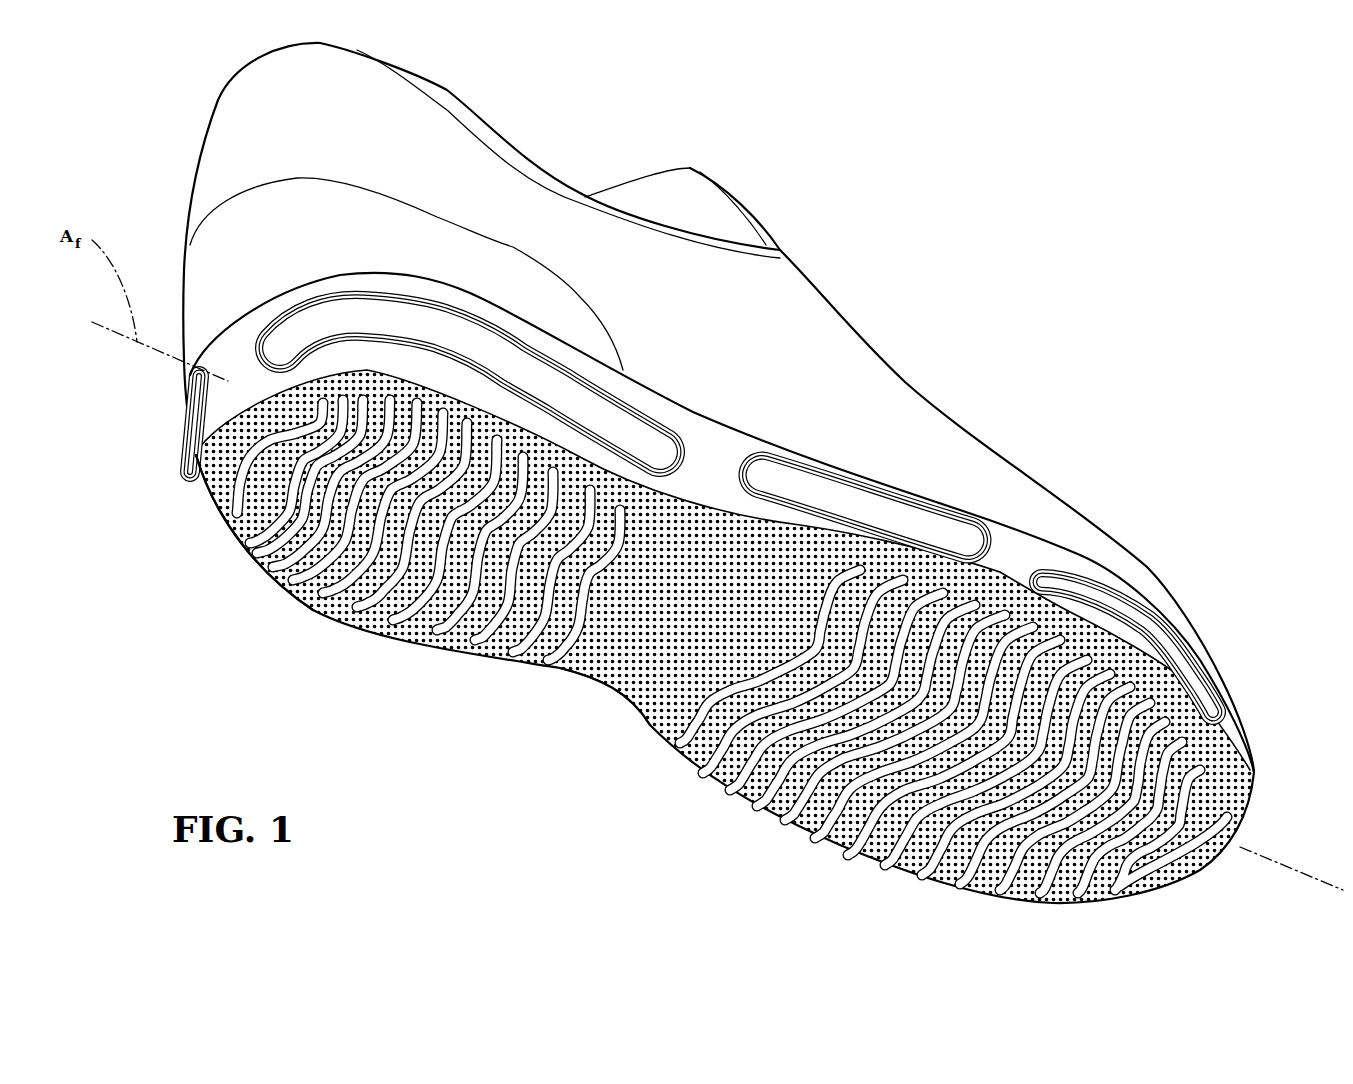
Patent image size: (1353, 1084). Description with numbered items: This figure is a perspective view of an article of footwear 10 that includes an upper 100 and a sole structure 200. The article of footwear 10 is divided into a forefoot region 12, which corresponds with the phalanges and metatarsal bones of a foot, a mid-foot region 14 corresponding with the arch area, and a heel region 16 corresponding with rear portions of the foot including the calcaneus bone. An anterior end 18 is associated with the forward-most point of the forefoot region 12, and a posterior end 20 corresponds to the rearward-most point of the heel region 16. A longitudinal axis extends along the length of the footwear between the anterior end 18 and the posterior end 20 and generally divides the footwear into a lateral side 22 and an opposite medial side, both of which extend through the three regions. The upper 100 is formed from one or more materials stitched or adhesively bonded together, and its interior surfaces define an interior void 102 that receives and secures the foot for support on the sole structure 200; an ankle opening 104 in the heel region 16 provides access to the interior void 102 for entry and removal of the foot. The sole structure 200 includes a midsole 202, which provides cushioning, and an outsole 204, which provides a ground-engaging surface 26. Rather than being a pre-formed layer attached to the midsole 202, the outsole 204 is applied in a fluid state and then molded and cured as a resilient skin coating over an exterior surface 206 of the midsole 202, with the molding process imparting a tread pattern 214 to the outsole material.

The article of footwear 10 is at (1035, 210).
The forefoot region 12 is at (966, 905).
The mid-foot region 14 is at (568, 843).
The heel region 16 is at (226, 596).
The anterior end 18 is at (1255, 787).
The posterior end 20 is at (205, 304).
The lateral side 22 is at (793, 397).
The ground-engaging surface 26 is at (667, 713).
The upper 100 is at (948, 397).
The interior void 102 is at (538, 168).
The ankle opening 104 is at (568, 154).
The sole structure 200 is at (577, 723).
The midsole 202 is at (1005, 549).
The outsole 204 is at (1045, 607).
The exterior surface 206 is at (722, 450).
The tread pattern 214 is at (370, 607).